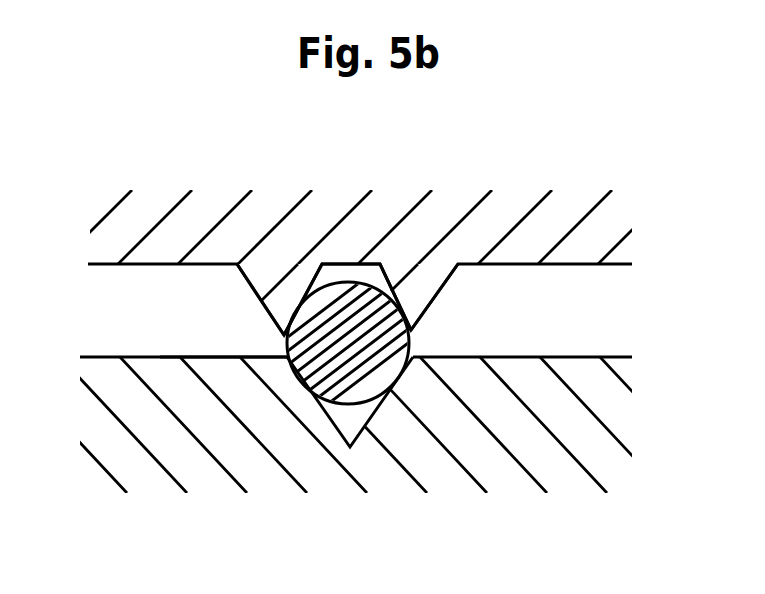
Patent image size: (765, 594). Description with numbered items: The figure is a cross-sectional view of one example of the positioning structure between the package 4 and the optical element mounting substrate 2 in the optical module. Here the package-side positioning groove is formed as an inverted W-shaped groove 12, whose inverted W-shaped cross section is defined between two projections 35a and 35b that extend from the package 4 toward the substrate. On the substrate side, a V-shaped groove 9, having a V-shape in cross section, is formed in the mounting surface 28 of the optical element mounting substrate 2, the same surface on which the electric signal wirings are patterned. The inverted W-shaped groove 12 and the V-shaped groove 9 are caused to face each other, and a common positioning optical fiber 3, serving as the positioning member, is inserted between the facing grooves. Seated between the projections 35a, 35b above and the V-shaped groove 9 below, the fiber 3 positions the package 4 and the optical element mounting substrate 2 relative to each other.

The optical element mounting substrate 2 is at (577, 378).
The positioning member 3 is at (392, 347).
The package 4 is at (588, 253).
The V-shaped groove 9 is at (368, 402).
The inverted W-shaped groove 12 is at (347, 272).
The mounting surface 28 is at (219, 356).
The projection 35a is at (281, 315).
The projection 35b is at (445, 290).